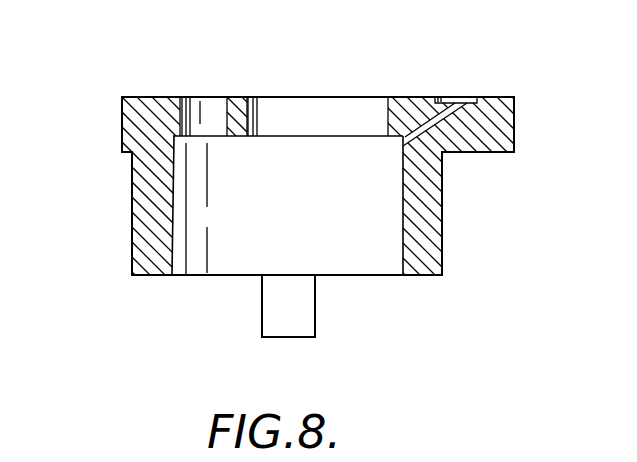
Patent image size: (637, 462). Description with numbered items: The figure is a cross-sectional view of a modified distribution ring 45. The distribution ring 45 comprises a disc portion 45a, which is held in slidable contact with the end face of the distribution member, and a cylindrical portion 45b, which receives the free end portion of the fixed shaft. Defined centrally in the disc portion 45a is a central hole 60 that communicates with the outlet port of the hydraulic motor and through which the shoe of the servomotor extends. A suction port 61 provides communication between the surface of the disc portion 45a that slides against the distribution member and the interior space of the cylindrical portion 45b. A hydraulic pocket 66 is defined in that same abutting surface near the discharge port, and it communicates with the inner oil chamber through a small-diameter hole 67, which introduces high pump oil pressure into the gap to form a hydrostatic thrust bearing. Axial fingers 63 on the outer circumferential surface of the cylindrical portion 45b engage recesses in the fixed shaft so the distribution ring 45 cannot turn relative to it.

The distribution ring 45 is at (437, 65).
The disc portion 45a is at (139, 97).
The cylindrical portion 45b is at (132, 182).
The central hole 60 is at (383, 99).
The suction port 61 is at (190, 105).
The axial fingers 63 is at (315, 307).
The hydraulic pocket 66 is at (475, 97).
The small-diameter hole 67 is at (410, 136).